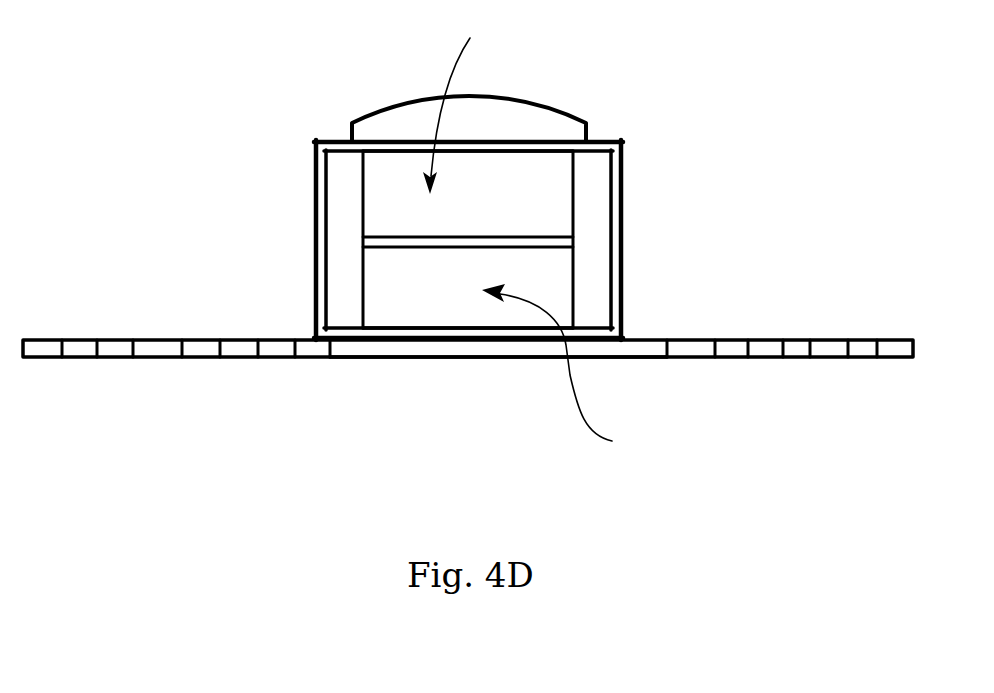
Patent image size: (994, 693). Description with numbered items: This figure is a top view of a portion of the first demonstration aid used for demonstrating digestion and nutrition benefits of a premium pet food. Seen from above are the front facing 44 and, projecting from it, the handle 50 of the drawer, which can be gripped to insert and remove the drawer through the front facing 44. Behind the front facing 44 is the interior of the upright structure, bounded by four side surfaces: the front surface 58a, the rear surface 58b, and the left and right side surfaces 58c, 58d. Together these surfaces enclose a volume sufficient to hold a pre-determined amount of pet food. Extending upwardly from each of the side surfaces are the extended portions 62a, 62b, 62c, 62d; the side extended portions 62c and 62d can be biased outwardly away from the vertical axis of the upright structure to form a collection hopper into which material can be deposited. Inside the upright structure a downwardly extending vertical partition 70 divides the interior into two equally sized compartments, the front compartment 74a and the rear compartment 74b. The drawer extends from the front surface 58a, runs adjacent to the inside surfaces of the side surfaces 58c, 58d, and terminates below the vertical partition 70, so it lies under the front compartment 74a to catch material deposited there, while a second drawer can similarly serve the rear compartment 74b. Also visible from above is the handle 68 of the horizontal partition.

The front facing 44 is at (192, 357).
The handle 50 is at (432, 358).
The front surface 58a is at (480, 330).
The rear surface 58b is at (408, 142).
The left side surface 58c is at (363, 284).
The right side surface 58d is at (575, 284).
The front extended portion 62a is at (359, 340).
The rear extended portion 62b is at (563, 143).
The left side extended portion 62c is at (318, 223).
The right side extended portion 62d is at (622, 224).
The handle of horizontal partition 68 is at (477, 128).
The vertical partition 70 is at (483, 236).
The front compartment 74a is at (574, 368).
The rear compartment 74b is at (464, 101).